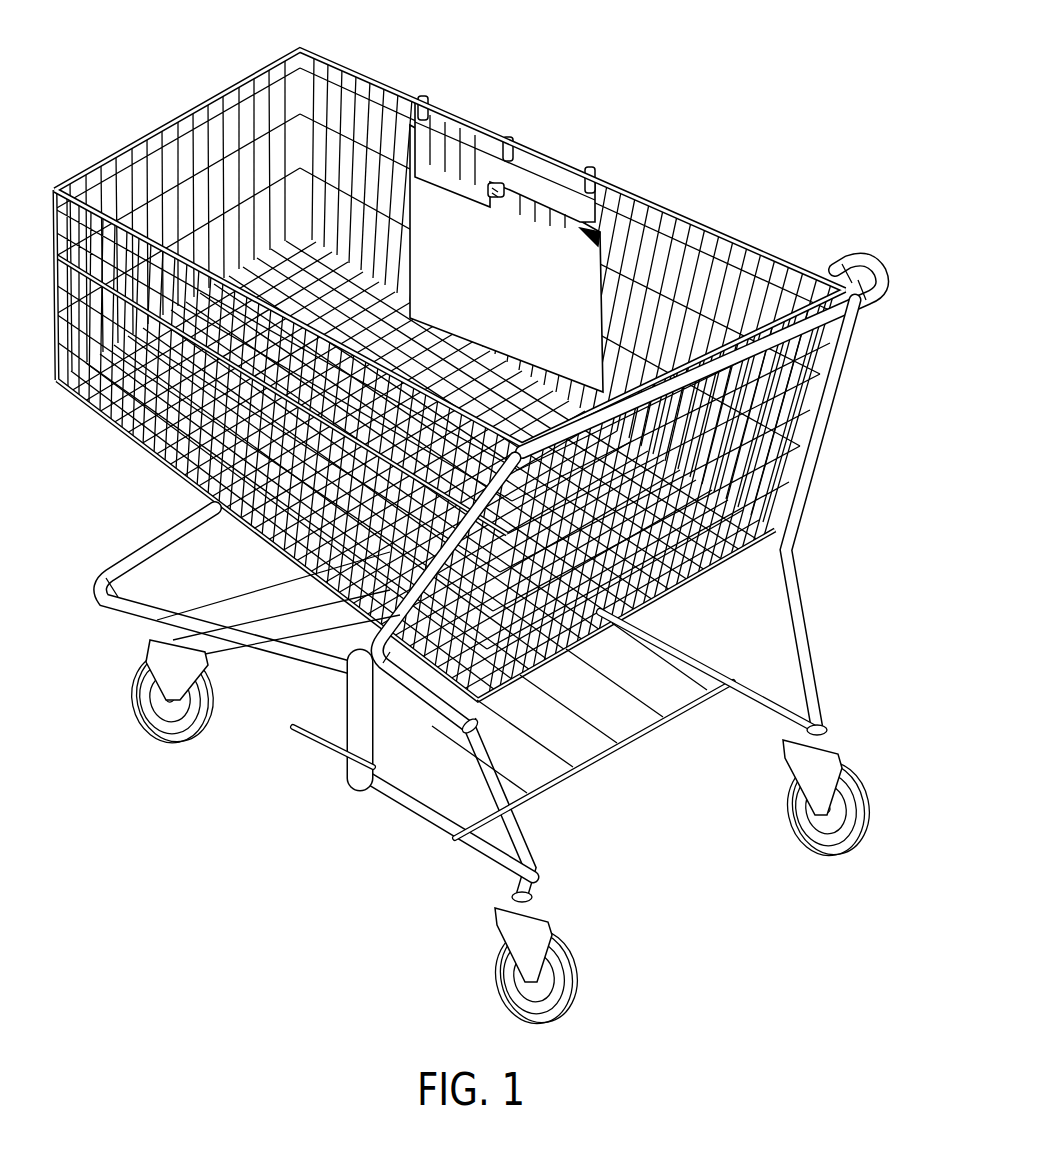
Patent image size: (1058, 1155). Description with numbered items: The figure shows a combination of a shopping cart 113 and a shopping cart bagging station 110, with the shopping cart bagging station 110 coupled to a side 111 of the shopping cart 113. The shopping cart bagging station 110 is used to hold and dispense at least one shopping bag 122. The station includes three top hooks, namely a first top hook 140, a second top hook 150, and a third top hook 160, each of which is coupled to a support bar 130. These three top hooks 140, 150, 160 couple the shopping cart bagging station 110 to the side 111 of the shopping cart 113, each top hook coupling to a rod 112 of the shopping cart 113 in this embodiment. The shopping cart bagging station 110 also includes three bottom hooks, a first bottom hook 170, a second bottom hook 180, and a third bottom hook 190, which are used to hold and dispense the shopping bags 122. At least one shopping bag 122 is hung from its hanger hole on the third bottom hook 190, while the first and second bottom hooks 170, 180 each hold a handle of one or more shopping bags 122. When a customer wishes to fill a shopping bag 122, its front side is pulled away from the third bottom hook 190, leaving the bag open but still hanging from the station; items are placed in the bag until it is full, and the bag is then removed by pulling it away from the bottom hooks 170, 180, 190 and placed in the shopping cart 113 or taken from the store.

The shopping cart bagging station 110 is at (652, 57).
The side 111 is at (312, 58).
The rod 112 is at (398, 98).
The shopping cart 113 is at (700, 242).
The shopping bag 122 is at (700, 200).
The support bar 130 is at (466, 150).
The first top hook 140 is at (434, 102).
The second top hook 150 is at (590, 172).
The third top hook 160 is at (506, 142).
The first bottom hook 170 is at (371, 92).
The second bottom hook 180 is at (580, 300).
The third bottom hook 190 is at (502, 195).